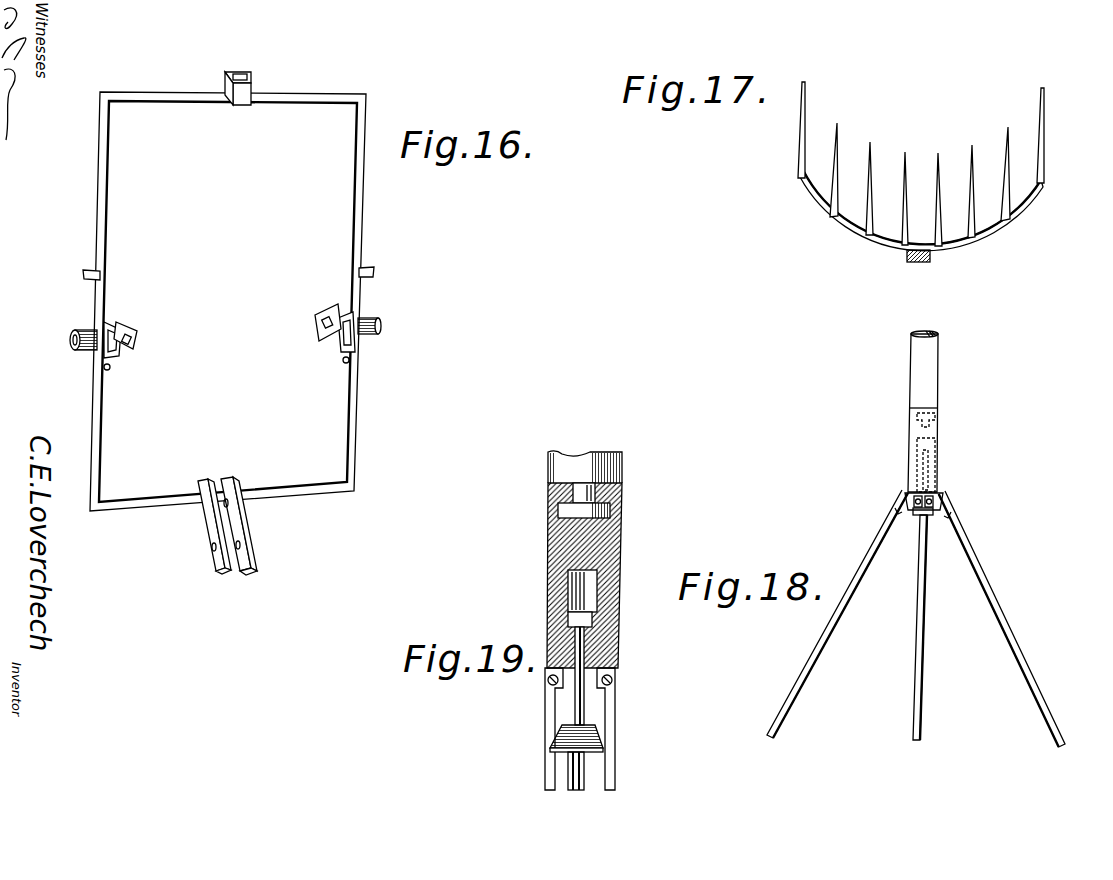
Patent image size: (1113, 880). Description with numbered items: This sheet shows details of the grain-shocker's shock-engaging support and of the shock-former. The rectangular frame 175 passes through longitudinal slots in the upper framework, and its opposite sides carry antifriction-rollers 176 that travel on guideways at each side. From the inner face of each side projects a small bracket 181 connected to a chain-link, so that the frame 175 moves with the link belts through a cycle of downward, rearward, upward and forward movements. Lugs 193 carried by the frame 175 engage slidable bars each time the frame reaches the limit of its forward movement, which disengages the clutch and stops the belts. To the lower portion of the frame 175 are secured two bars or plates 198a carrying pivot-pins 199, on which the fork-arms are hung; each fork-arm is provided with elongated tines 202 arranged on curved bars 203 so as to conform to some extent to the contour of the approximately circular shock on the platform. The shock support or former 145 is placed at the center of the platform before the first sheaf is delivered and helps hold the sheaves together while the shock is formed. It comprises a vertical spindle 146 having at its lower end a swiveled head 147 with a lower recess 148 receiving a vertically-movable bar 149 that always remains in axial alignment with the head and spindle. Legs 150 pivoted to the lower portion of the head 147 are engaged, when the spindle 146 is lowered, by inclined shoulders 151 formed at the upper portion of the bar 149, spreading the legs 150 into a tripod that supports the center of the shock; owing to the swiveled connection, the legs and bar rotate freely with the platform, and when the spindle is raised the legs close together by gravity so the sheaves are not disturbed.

In FIG. 16, the rectangular frame 175 is at (108, 237).
In FIG. 16, the lugs 193 is at (83, 271).
In FIG. 16, the antifriction-rollers 176 is at (80, 352).
In FIG. 16, the bracket 181 is at (110, 322).
In FIG. 16, the pivot-pins 199 is at (212, 551).
In FIG. 16, the bars or plates 198a is at (223, 578).
In FIG. 17, the elongated tines 202 is at (838, 122).
In FIG. 17, the curved bars 203 is at (832, 220).
In FIG. 18, the vertical spindle 146 is at (938, 375).
In FIG. 19, the vertical spindle 146 is at (622, 463).
In FIG. 18, the swiveled head 147 is at (935, 437).
In FIG. 19, the swiveled head 147 is at (608, 557).
In FIG. 18, the recess 148 is at (925, 463).
In FIG. 19, the recess 148 is at (588, 637).
In FIG. 18, the shock support or former 145 is at (907, 477).
In FIG. 18, the inclined shoulders 151 is at (935, 505).
In FIG. 19, the inclined shoulders 151 is at (592, 727).
In FIG. 18, the legs 150 is at (812, 648).
In FIG. 19, the legs 150 is at (608, 698).
In FIG. 18, the vertically-movable bar 149 is at (918, 638).
In FIG. 19, the vertically-movable bar 149 is at (587, 768).